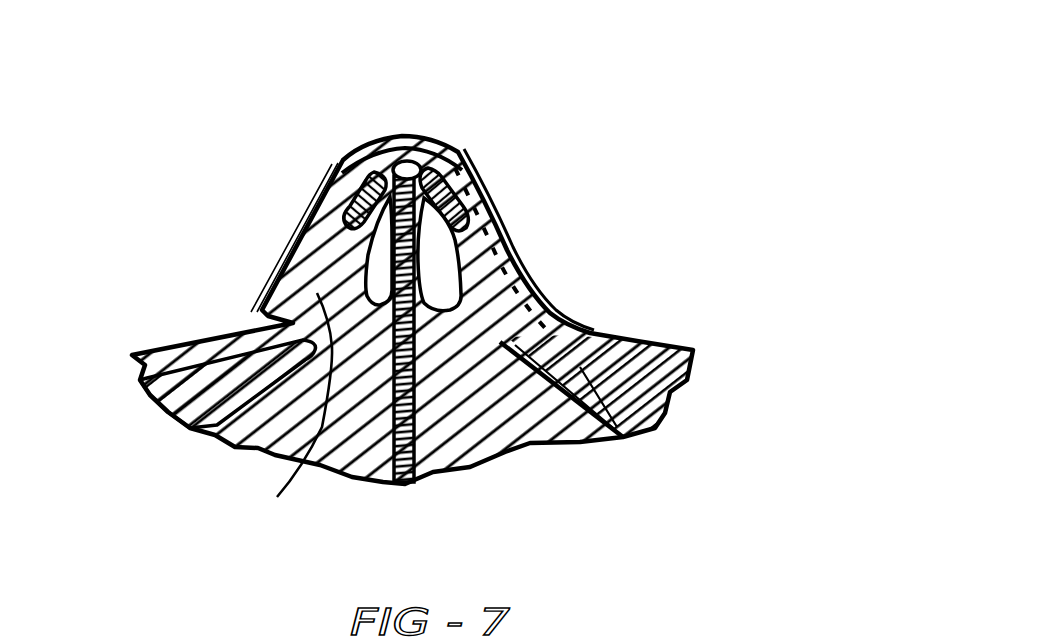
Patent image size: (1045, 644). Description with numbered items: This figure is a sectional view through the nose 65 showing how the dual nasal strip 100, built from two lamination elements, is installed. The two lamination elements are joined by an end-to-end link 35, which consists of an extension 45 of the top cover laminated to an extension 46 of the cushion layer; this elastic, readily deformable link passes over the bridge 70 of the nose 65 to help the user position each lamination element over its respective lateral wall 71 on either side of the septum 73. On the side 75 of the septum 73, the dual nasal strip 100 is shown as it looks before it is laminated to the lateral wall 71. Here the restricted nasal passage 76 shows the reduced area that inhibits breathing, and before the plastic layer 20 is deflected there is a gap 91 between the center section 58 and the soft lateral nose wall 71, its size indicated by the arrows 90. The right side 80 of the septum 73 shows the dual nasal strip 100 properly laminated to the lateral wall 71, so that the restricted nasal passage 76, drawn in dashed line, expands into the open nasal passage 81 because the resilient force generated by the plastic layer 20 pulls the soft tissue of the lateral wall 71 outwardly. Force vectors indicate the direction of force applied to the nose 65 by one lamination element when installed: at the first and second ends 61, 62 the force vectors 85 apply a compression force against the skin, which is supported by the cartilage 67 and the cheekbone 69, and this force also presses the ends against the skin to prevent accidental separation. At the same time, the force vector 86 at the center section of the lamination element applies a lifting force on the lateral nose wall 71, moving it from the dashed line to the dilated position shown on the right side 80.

The dual nasal strip 100 is at (470, 162).
The force vector arrows 85 is at (488, 167).
The plastic layer 20 is at (487, 203).
The lateral wall 71 is at (497, 225).
The force vector arrow 86 is at (643, 146).
The center section 58 is at (512, 250).
The restricted nasal passage 76 is at (526, 272).
The second end 62 is at (573, 317).
The open nasal passage 81 is at (580, 327).
The cheekbone 69 is at (230, 382).
The right side 80 is at (470, 397).
The arrows 90 is at (97, 240).
The side 75 is at (297, 325).
The gap 91 is at (325, 291).
The septum 73 is at (347, 157).
The bridge 70 is at (357, 147).
The end-to-end link 35 is at (380, 145).
The extension of the top cover 45 is at (398, 137).
The extension of the cushion layer 46 is at (433, 140).
The nose 65 is at (452, 143).
The first end 61 is at (462, 152).
The cartilage 67 is at (466, 158).